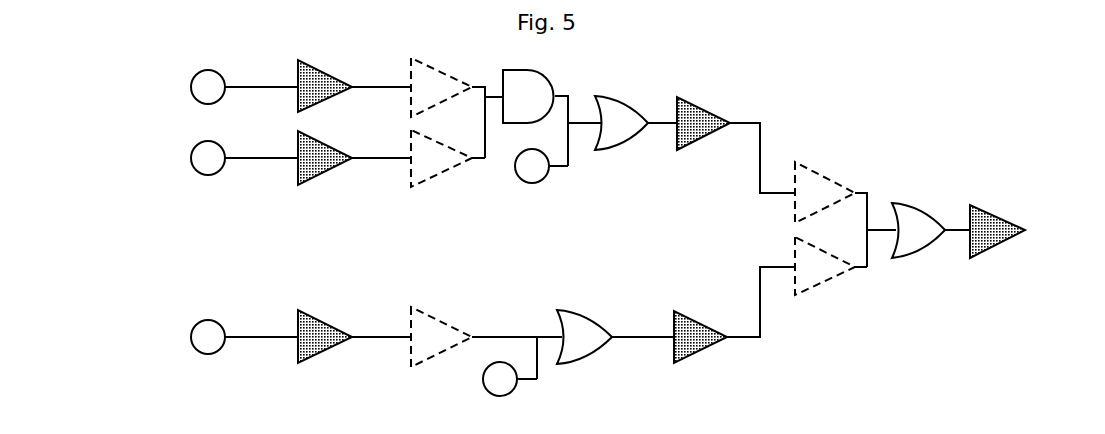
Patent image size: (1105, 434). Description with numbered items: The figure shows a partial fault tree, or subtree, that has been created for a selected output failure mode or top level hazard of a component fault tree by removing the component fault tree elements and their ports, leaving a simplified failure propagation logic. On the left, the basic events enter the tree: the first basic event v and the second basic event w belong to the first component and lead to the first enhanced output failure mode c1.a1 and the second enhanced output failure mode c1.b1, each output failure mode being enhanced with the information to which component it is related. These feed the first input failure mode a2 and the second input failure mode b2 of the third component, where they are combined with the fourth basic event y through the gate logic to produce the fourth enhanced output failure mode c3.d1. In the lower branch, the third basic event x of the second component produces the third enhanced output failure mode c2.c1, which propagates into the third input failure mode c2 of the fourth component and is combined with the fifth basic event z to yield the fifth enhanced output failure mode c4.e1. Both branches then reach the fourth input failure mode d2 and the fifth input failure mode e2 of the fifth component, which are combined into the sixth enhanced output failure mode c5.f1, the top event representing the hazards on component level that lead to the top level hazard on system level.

The first basic event v is at (244, 87).
The second basic event w is at (244, 158).
The third basic event x is at (244, 337).
The fourth basic event y is at (541, 166).
The fifth basic event z is at (510, 379).
The first enhanced output failure mode c1.a1 is at (352, 73).
The second enhanced output failure mode c1.b1 is at (352, 174).
The third enhanced output failure mode c2.c1 is at (352, 352).
The fourth enhanced output failure mode c3.d1 is at (735, 129).
The fifth enhanced output failure mode c4.e1 is at (734, 331).
The sixth enhanced output failure mode c5.f1 is at (988, 218).
The first input failure mode a2 is at (457, 108).
The second input failure mode b2 is at (448, 158).
The third input failure mode c2 is at (486, 343).
The fourth input failure mode d2 is at (845, 214).
The fifth input failure mode e2 is at (831, 266).